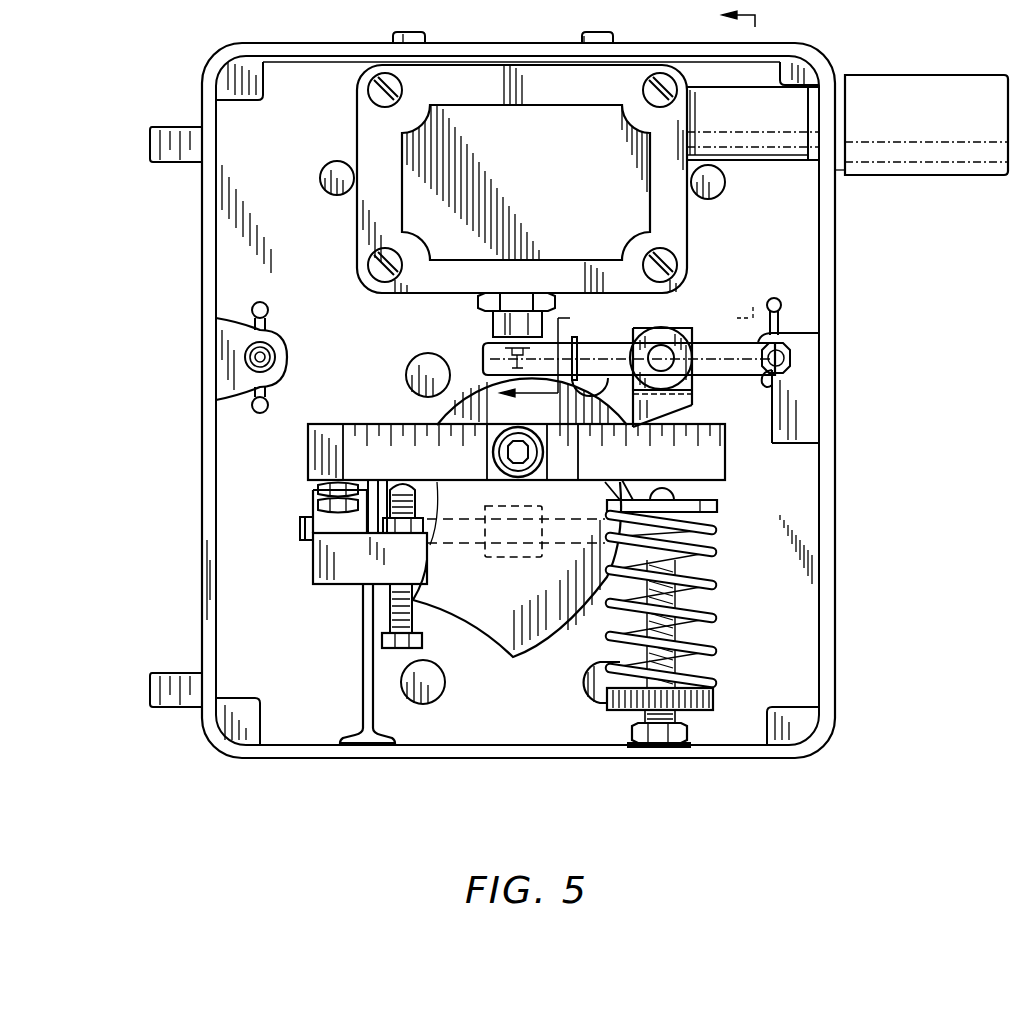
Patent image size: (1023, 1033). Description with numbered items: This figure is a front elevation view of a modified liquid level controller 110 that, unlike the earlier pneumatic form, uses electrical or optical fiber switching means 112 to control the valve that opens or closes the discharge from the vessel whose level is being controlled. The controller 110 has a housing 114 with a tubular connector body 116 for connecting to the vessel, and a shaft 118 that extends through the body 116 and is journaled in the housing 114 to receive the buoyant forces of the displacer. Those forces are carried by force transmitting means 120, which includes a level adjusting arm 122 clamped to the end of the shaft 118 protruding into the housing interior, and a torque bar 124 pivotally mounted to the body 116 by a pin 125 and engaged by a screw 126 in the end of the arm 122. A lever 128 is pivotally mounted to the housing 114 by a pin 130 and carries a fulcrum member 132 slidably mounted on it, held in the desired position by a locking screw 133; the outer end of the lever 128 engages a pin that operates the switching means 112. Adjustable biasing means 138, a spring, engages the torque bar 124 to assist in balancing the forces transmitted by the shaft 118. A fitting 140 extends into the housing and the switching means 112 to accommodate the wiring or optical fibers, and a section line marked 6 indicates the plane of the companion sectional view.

The controller 110 is at (838, 250).
The switching means 112 is at (355, 232).
The housing 114 is at (202, 443).
The tubular connector body 116 is at (497, 660).
The shaft 118 is at (298, 530).
The force transmitting means 120 is at (238, 507).
The level adjusting arm 122 is at (313, 567).
The torque bar 124 is at (308, 452).
The pin 125 is at (528, 440).
The screw 126 is at (382, 641).
The lever 128 is at (718, 342).
The pin 130 is at (795, 354).
The fulcrum member 132 is at (693, 410).
The locking screw 133 is at (663, 330).
The adjustable biasing means 138 is at (713, 598).
The fitting 140 is at (780, 163).
The section line 6- 6 is at (619, 206).